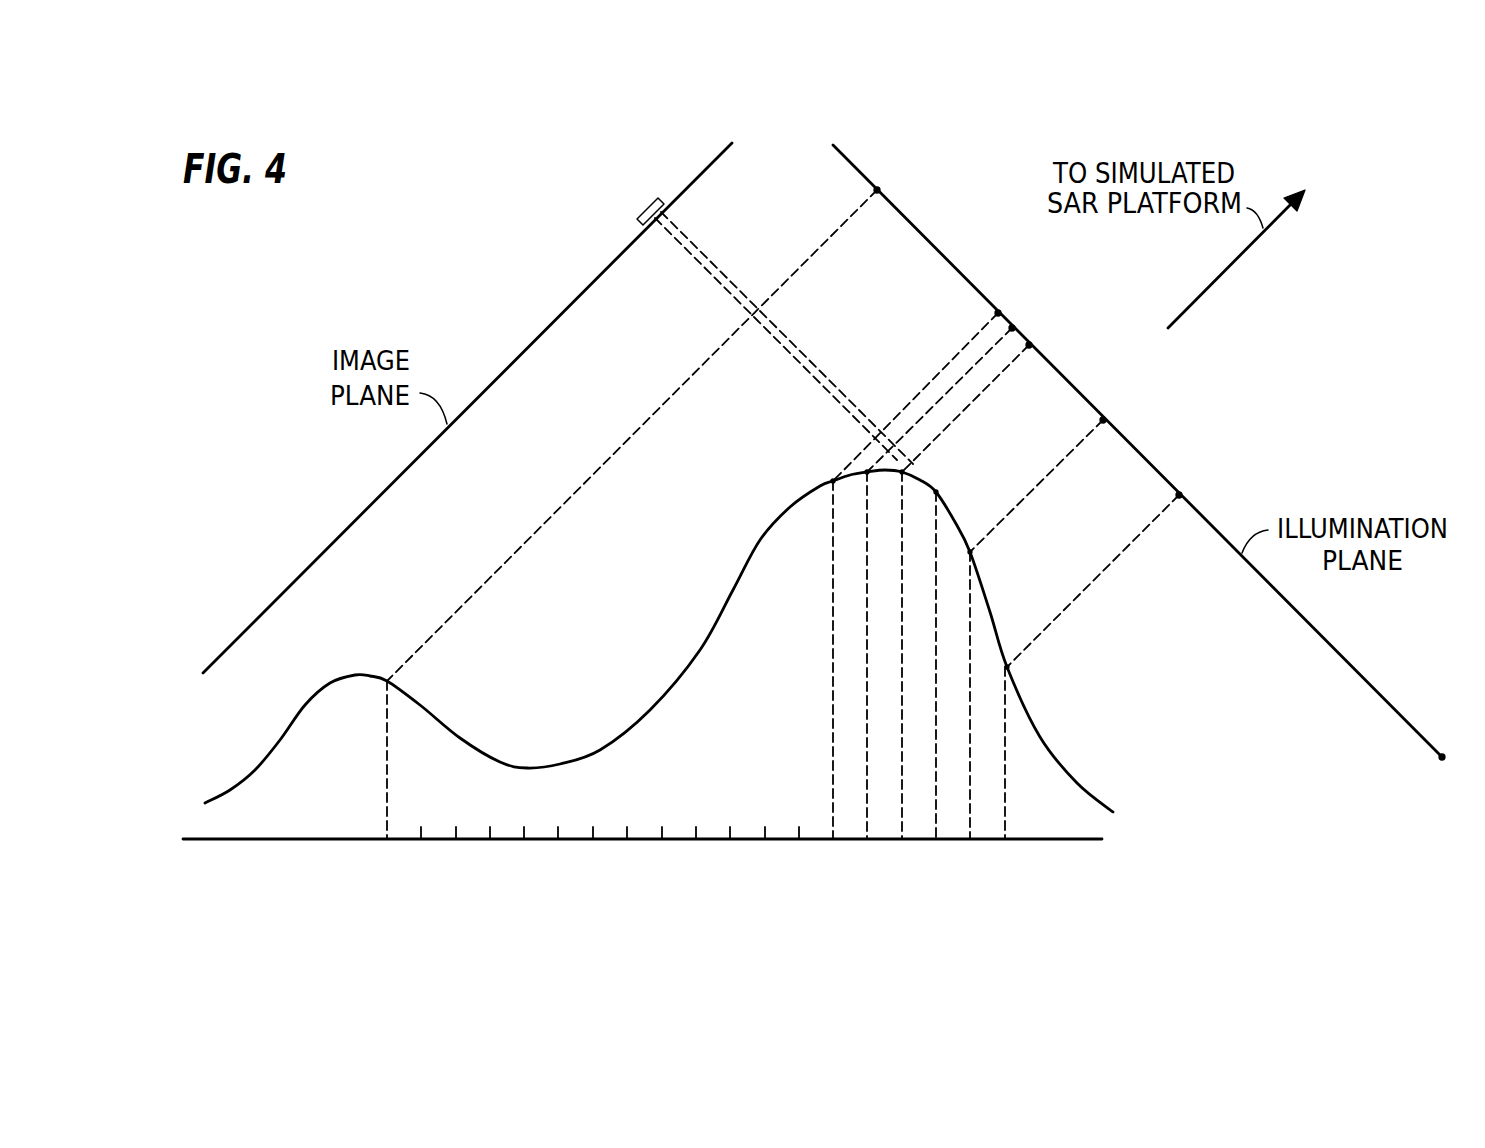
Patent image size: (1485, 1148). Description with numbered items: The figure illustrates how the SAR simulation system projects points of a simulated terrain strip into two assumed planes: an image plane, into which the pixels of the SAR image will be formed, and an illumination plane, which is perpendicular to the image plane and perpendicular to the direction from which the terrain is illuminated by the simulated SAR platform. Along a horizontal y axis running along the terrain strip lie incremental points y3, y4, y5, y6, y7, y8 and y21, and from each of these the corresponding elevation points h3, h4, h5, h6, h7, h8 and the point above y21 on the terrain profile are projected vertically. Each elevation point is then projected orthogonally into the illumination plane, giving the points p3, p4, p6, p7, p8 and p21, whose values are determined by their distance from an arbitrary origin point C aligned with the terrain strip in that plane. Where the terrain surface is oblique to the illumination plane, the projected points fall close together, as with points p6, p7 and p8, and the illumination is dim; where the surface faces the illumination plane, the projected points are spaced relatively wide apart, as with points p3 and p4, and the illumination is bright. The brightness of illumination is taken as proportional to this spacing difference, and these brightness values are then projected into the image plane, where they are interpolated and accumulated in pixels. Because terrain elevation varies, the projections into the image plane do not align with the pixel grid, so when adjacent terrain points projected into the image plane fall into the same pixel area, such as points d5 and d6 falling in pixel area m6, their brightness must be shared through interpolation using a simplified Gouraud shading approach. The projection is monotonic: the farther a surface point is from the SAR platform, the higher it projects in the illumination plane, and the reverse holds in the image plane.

The pixel area m6 is at (655, 200).
The projected terrain point d5 is at (664, 208).
The projected terrain point d6 is at (651, 226).
The illumination plane projected point p21 is at (652, 420).
The illumination plane projected point p8 is at (1000, 311).
The illumination plane projected point p7 is at (1014, 326).
The illumination plane projected point p6 is at (1032, 345).
The illumination plane projected point p4 is at (1051, 469).
The illumination plane projected point p3 is at (1109, 564).
The origin point C is at (1439, 742).
The elevation point h8 is at (833, 479).
The elevation point h7 is at (867, 470).
The elevation point h6 is at (904, 470).
The elevation point h5 is at (938, 492).
The elevation point h4 is at (972, 552).
The elevation point h3 is at (1009, 668).
The incremental point y21 is at (391, 781).
The incremental point y8 is at (837, 681).
The incremental point y7 is at (871, 677).
The incremental point y6 is at (906, 677).
The incremental point y5 is at (940, 687).
The incremental point y4 is at (974, 717).
The incremental point y3 is at (1009, 774).